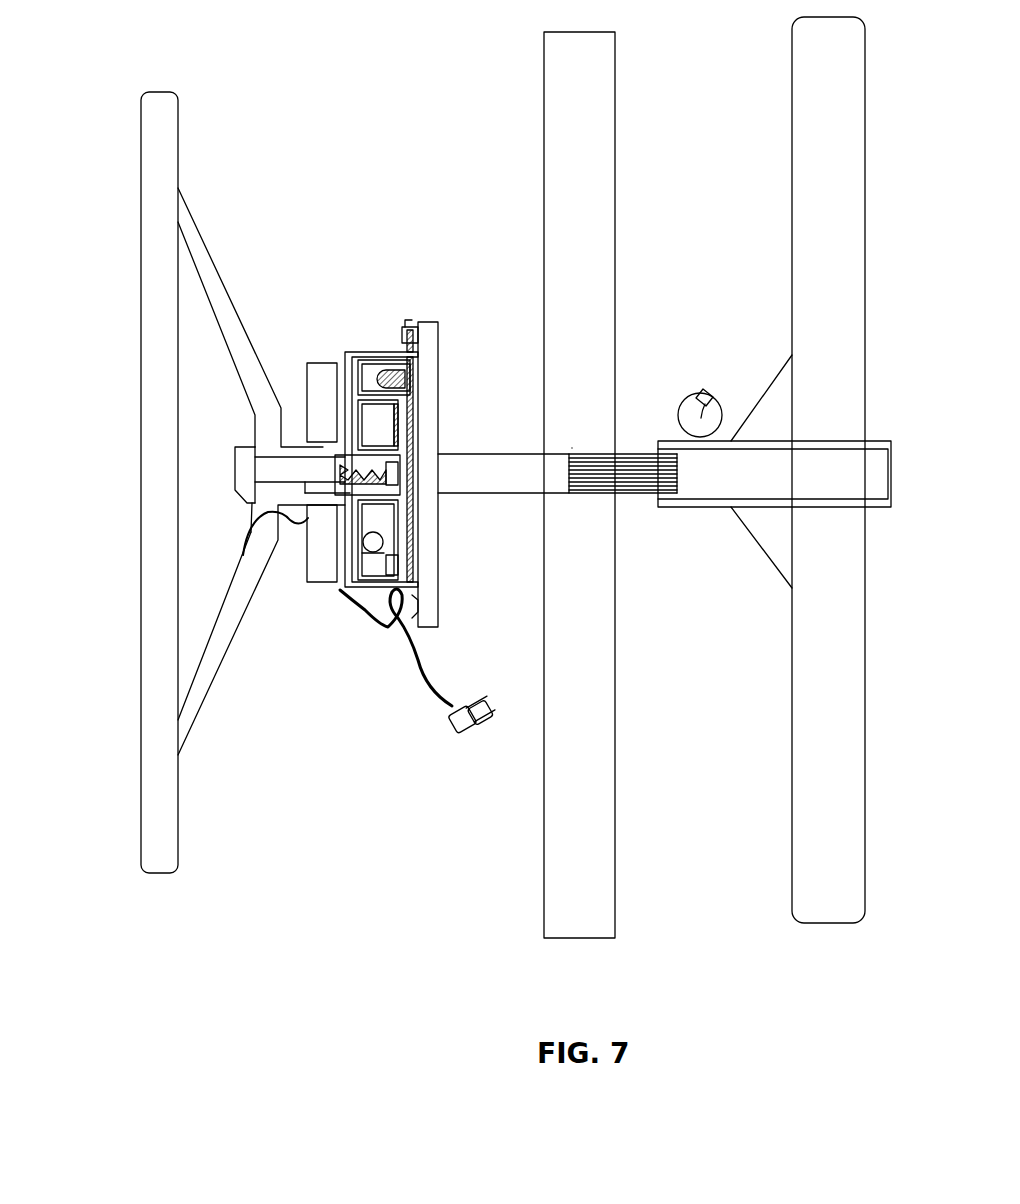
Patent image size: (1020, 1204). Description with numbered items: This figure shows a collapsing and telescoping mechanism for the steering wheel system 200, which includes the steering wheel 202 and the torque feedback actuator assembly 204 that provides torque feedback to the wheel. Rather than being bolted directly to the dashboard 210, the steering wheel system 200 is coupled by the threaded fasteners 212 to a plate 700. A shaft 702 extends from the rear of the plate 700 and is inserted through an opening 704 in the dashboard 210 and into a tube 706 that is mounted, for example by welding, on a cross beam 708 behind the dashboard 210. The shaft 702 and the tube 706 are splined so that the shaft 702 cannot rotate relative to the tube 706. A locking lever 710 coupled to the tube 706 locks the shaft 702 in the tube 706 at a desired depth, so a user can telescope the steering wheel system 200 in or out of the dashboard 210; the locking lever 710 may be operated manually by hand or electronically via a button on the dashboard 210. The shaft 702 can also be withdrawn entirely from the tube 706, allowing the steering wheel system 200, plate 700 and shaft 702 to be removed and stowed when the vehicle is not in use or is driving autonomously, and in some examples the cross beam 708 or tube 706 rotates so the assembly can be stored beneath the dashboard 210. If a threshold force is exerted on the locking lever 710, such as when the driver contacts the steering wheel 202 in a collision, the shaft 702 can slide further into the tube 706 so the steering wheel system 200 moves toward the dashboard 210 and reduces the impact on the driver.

The steering wheel system 200 is at (104, 25).
The steering wheel 202 is at (160, 162).
The torque feedback actuator assembly 204 is at (347, 294).
The dashboard 210 is at (572, 113).
The threaded fasteners 212 is at (402, 322).
The plate 700 is at (430, 363).
The shaft 702 is at (478, 458).
The opening 704 is at (580, 438).
The tube 706 is at (705, 510).
The cross beam 708 is at (853, 305).
The locking lever 710 is at (703, 410).